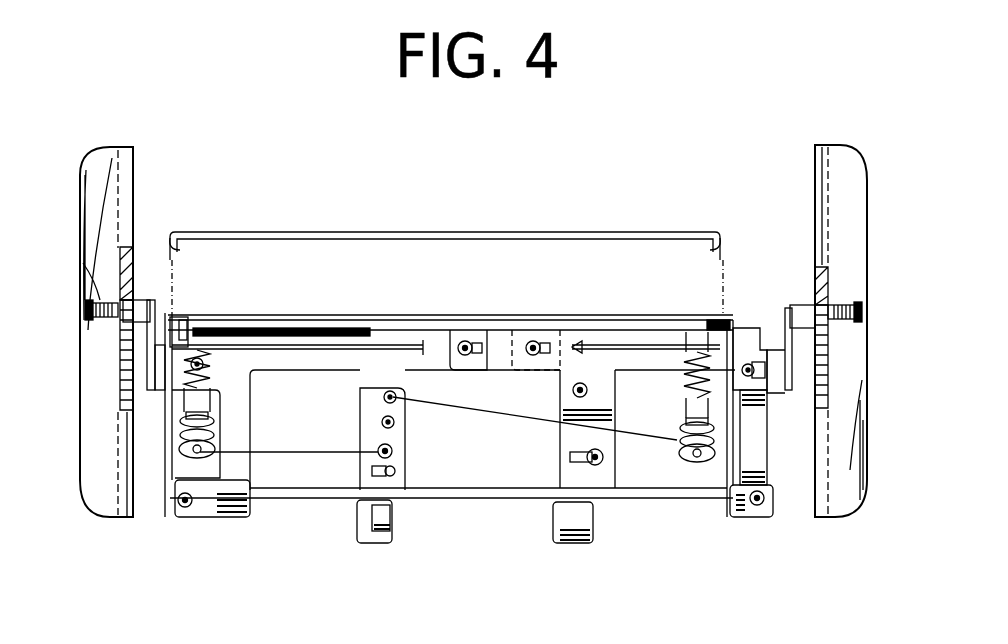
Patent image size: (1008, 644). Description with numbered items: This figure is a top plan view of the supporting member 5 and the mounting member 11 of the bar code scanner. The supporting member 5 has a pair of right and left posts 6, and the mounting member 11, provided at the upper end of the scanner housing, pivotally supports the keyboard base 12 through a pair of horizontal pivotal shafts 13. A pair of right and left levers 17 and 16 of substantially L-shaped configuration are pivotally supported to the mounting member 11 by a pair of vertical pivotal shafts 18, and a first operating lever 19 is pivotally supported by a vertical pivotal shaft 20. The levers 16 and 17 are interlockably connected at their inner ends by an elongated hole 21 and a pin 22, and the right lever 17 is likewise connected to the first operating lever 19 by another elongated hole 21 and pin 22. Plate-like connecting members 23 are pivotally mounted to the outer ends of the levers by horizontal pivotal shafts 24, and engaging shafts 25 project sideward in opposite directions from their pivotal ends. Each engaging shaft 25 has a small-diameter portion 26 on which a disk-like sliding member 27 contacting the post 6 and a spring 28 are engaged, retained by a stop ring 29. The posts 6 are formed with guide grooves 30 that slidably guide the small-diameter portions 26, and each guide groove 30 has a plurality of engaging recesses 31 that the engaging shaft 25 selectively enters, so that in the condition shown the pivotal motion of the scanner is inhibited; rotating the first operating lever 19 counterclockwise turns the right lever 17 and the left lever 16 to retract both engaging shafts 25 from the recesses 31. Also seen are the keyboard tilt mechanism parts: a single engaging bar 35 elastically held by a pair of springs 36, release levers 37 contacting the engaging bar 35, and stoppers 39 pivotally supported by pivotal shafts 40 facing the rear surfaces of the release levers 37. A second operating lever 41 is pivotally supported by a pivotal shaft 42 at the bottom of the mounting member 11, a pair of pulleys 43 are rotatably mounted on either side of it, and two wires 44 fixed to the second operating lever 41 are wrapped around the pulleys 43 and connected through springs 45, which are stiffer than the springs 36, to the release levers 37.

The supporting member 5 is at (105, 148).
The posts 6 is at (84, 178).
The mounting member 11 is at (493, 470).
The base 12 is at (320, 232).
The horizontal pivotal shafts 13 is at (165, 515).
The left lever 16 is at (240, 468).
The right lever 17 is at (760, 460).
The pivotal shafts 18 is at (185, 508).
The first operating lever 19 is at (597, 478).
The pivotal shaft 20 is at (580, 383).
The elongated hole 21 is at (477, 347).
The pin 22 is at (460, 347).
The connecting members 23 is at (147, 362).
The horizontal pivotal shafts 24 is at (150, 400).
The engaging shafts 25 is at (140, 300).
The small-diameter portions 26 is at (90, 313).
The sliding members 27 is at (118, 333).
The springs 28 is at (84, 240).
The stop rings 29 is at (84, 265).
The guide grooves 30 is at (832, 398).
The engaging recesses 31 is at (832, 358).
The engaging bar 35 is at (357, 343).
The springs 36 is at (215, 363).
The release levers 37 is at (217, 332).
The stoppers 39 is at (213, 330).
The pivotal shafts 40 is at (173, 243).
The second operating lever 41 is at (377, 543).
The pivotal shaft 42 is at (393, 425).
The pulleys 43 is at (200, 455).
The wires 44 is at (307, 455).
The springs 45 is at (177, 323).